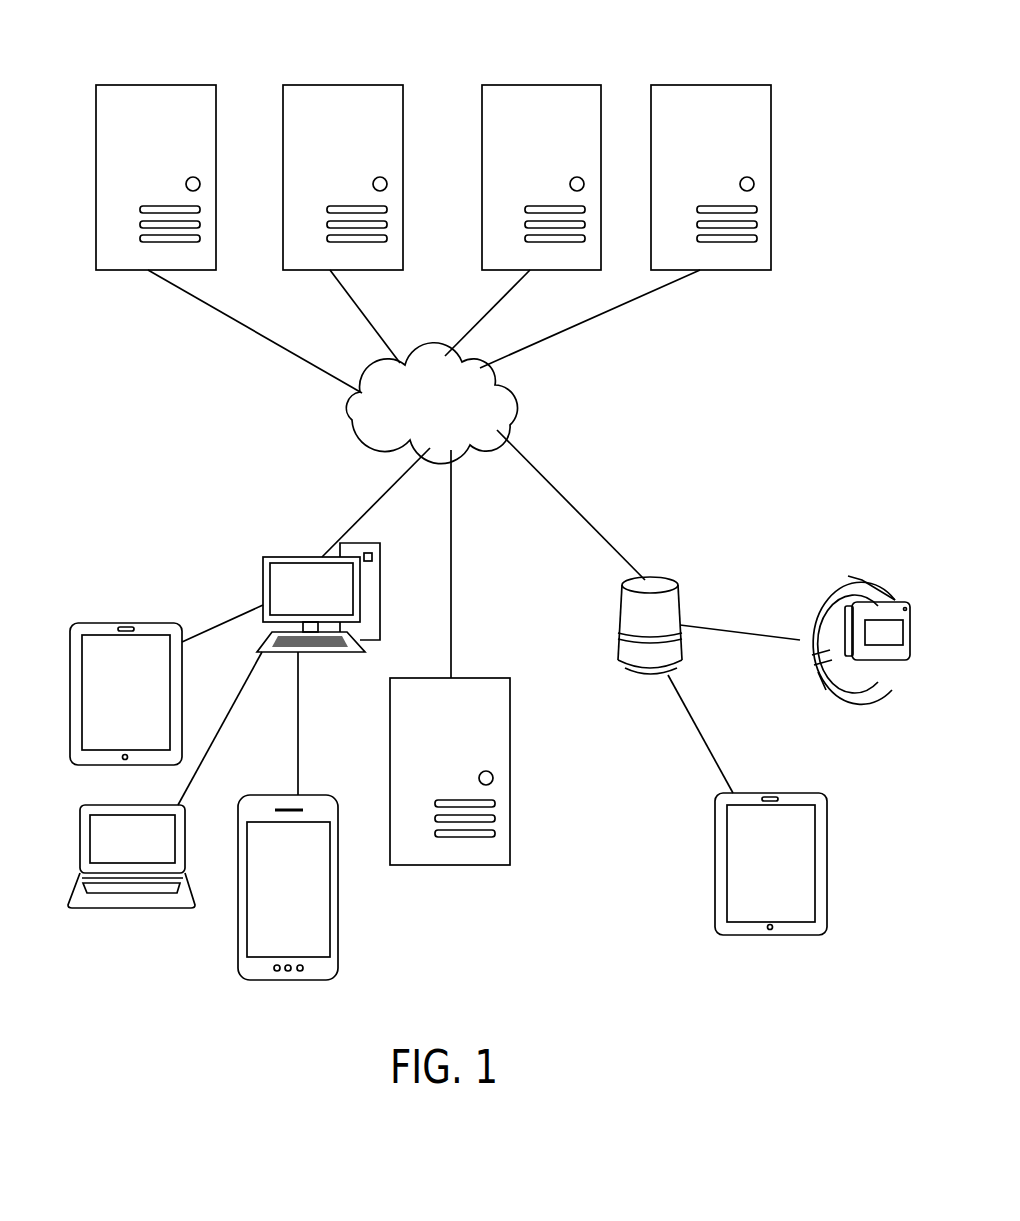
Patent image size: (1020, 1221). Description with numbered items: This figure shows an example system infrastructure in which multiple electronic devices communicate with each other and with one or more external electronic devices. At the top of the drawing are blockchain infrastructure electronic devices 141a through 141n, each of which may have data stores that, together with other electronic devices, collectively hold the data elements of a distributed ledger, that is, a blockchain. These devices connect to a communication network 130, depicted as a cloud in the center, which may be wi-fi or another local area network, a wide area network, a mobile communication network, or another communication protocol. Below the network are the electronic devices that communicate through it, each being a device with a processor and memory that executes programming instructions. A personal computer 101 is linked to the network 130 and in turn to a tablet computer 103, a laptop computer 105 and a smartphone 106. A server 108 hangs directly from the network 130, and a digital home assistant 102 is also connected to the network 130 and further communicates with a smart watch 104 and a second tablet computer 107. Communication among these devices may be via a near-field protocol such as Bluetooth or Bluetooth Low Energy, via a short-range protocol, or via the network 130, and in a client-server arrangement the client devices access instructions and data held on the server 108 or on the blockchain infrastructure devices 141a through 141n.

The blockchain infrastructure electronic device 141a is at (147, 85).
The blockchain infrastructure electronic device 141n is at (703, 85).
The communication network 130 is at (517, 402).
The personal computer 101 is at (278, 557).
The digital home assistant 102 is at (680, 613).
The tablet computer 103 is at (127, 623).
The smart watch 104 is at (852, 572).
The laptop computer 105 is at (78, 850).
The smartphone 106 is at (238, 922).
The tablet computer 107 is at (752, 793).
The server 108 is at (510, 790).